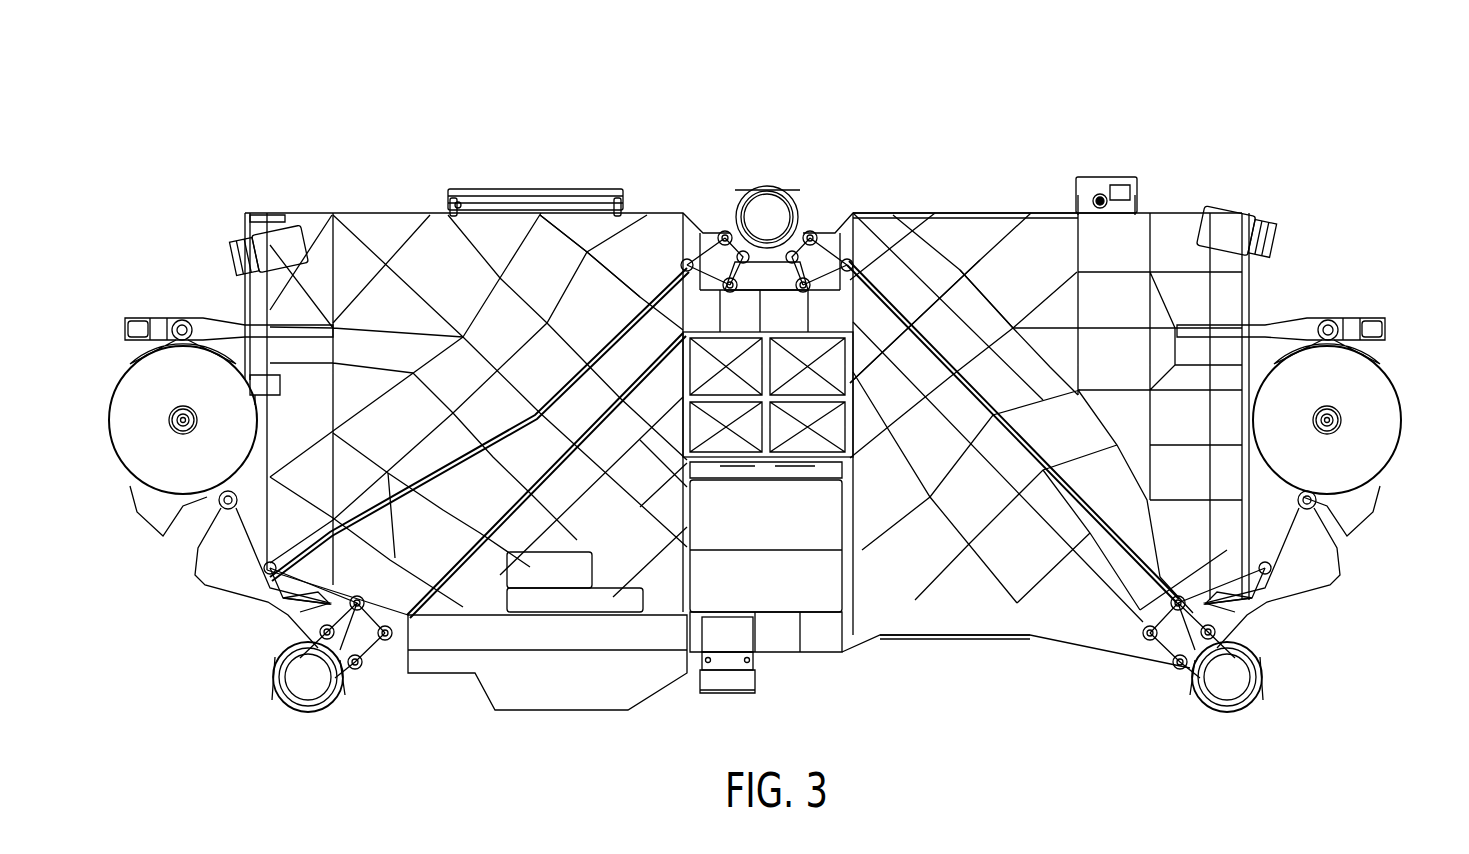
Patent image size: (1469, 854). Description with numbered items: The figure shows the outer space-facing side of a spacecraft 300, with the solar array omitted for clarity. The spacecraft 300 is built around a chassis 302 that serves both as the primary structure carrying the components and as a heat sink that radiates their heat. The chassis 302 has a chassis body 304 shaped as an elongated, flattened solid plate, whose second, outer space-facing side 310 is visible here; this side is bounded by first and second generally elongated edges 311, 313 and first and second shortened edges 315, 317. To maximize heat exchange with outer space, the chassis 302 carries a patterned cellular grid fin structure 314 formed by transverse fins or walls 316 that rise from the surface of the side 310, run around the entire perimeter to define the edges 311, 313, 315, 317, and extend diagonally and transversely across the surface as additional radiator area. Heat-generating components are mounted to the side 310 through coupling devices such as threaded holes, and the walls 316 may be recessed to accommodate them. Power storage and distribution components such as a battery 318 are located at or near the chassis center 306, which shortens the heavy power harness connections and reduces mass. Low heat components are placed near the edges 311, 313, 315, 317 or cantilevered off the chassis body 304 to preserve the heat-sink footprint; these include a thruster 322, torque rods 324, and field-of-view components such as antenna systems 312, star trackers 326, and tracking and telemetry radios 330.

The spacecraft 300 is at (1312, 103).
The chassis 302 is at (1190, 211).
The chassis body 304 is at (1250, 276).
The chassis center 306 is at (762, 468).
The second, outer space-facing side 310 is at (1010, 254).
The first generally elongated edge 311 is at (882, 213).
The antenna systems 312 is at (106, 470).
The second generally elongated edge 313 is at (935, 640).
The cellular grid fin structure 314 is at (958, 266).
The first shortened edge 315 is at (243, 292).
The transverse fins or walls 316 is at (617, 273).
The second shortened edge 317 is at (1245, 308).
The battery 318 is at (830, 330).
The thruster 322 is at (725, 680).
The torque rods 324 is at (481, 201).
The star trackers 326 is at (228, 236).
The tracking and telemetry radios 330 is at (1115, 177).